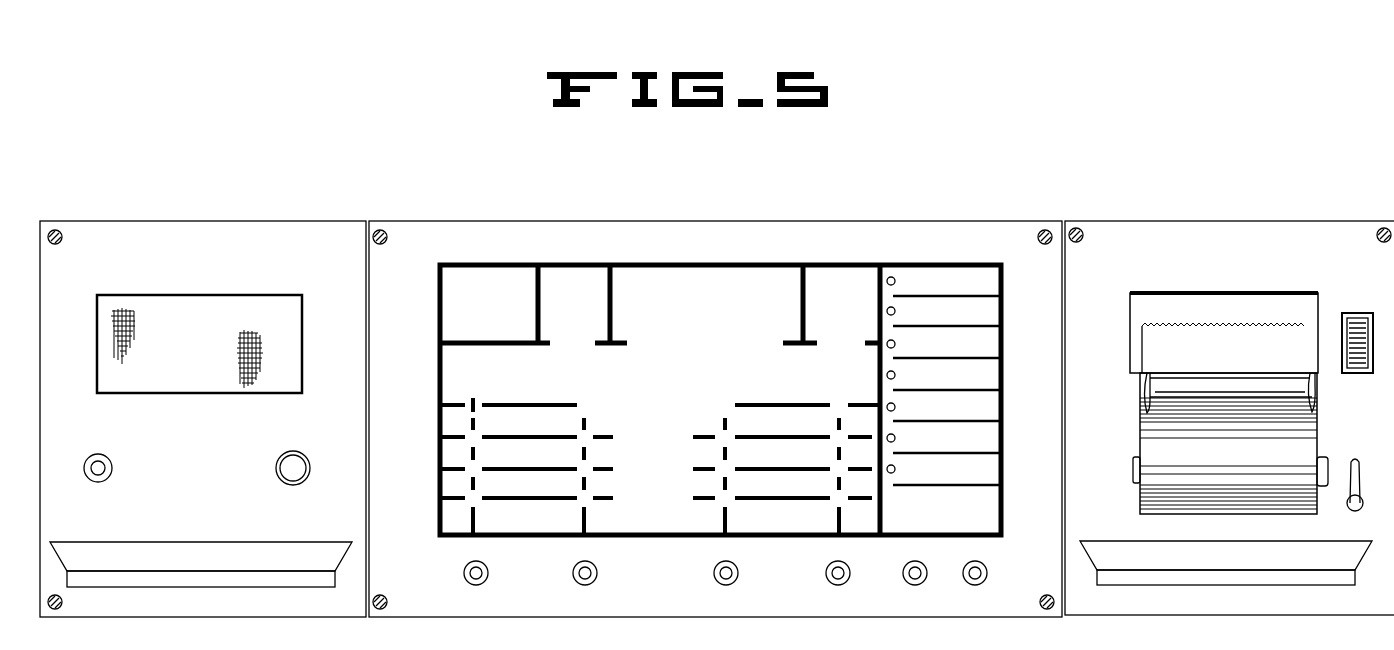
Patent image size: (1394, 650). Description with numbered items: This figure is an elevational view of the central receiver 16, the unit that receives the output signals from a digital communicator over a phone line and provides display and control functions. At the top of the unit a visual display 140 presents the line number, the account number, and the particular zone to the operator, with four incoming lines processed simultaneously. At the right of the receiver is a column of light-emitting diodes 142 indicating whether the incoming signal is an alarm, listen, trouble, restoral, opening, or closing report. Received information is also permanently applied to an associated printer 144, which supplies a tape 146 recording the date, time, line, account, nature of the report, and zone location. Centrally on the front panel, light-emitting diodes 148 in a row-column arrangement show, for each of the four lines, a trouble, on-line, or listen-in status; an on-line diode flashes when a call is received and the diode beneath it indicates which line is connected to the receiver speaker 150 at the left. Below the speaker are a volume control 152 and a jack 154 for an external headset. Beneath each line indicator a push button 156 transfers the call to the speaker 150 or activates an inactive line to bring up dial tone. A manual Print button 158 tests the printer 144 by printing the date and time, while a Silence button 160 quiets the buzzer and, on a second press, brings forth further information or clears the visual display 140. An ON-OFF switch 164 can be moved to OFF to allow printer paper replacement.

The central receiver 16 is at (1034, 200).
The visual display 140 is at (712, 288).
The light-emitting diodes 142 is at (884, 405).
The printer 144 is at (1216, 290).
The tape 146 is at (1147, 398).
The light-emitting diodes 148 is at (836, 440).
The receiver speaker 150 is at (237, 300).
The volume control 152 is at (302, 477).
The jack 154 is at (104, 473).
The push button 156 is at (575, 580).
The Print button 158 is at (908, 582).
The Silence button 160 is at (983, 582).
The ON-OFF switch 164 is at (1356, 462).